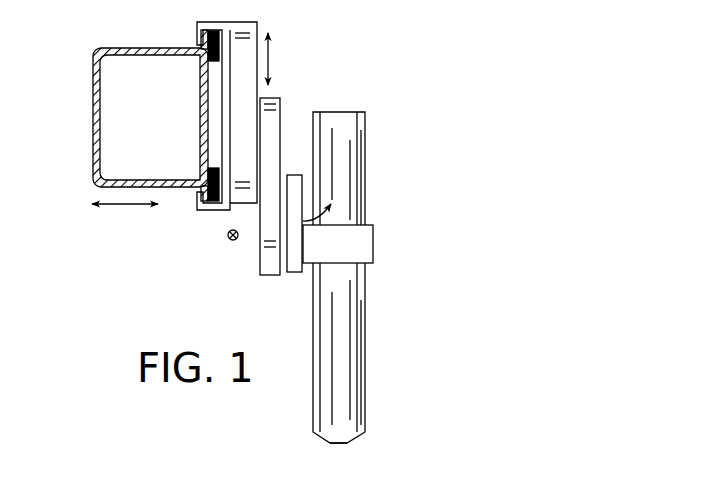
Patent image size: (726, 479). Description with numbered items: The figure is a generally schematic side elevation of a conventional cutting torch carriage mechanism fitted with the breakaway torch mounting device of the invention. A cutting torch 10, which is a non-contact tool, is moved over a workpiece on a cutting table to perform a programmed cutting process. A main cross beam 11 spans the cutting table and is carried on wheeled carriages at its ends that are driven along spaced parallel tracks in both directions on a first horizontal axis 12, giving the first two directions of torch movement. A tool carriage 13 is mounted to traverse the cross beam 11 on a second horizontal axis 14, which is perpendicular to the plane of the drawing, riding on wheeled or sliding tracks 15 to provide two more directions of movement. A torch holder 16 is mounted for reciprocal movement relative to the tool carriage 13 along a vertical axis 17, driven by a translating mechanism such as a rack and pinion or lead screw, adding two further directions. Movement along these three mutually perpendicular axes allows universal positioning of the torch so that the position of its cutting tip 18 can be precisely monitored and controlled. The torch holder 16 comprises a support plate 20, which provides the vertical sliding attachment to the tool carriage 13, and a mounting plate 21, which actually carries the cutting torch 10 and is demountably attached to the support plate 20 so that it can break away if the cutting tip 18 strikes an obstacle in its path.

The cutting torch 10 is at (356, 152).
The main cross beam 11 is at (151, 48).
The first horizontal axis 12 is at (133, 207).
The tool carriage 13 is at (236, 36).
The second horizontal axis 14 is at (227, 236).
The wheeled or sliding tracks 15 is at (206, 52).
The torch holder 16 is at (291, 112).
The vertical axis 17 is at (271, 59).
The cutting tip 18 is at (350, 436).
The support plate 20 is at (266, 264).
The mounting plate 21 is at (293, 178).